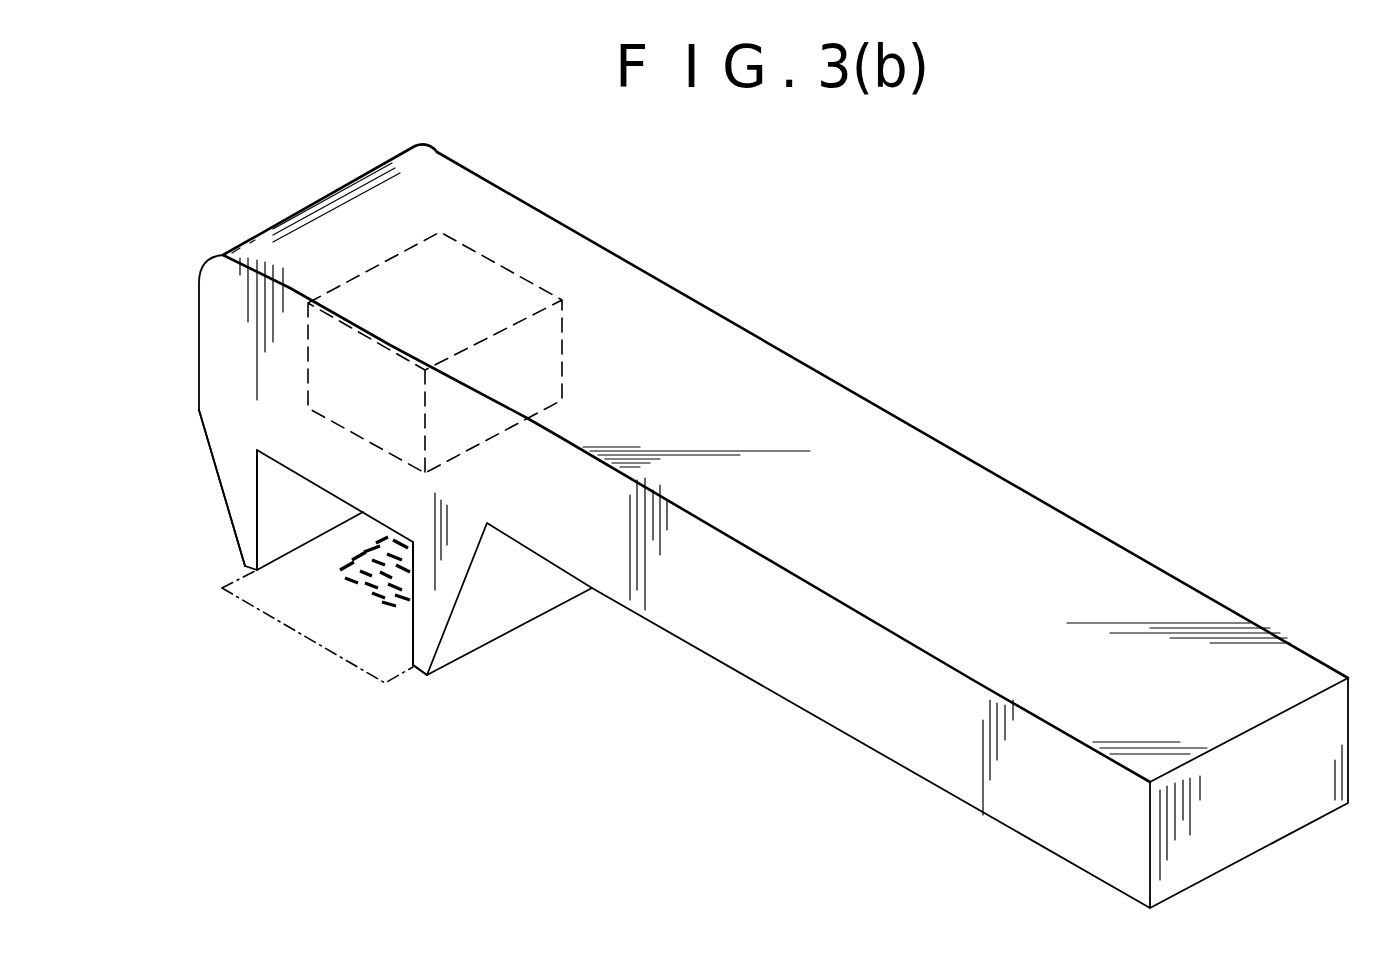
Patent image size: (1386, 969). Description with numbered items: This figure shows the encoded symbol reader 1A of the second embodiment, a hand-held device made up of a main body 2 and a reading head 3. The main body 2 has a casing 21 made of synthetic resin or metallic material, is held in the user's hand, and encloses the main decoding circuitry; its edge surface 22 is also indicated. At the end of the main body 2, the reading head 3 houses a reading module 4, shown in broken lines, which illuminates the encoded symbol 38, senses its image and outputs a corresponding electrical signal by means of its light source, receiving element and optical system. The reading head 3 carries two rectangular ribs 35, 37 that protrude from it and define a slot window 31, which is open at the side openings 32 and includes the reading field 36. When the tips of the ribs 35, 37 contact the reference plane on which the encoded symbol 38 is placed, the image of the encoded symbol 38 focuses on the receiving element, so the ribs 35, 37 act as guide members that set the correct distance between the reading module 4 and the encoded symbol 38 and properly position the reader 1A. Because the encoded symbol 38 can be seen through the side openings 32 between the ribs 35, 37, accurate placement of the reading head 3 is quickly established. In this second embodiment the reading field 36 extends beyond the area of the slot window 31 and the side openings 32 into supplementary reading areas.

The encoded symbol reader 1A is at (745, 517).
The main body 2 is at (848, 387).
The casing 21 is at (1020, 515).
The chamfered edge surface 22 is at (322, 237).
The reading head 3 is at (500, 607).
The slot window 31 is at (320, 555).
The side openings 32 is at (270, 510).
The rectangular rib 35 is at (445, 658).
The reading field 36 is at (310, 647).
The rectangular rib 37 is at (237, 547).
The encoded symbol 38 is at (368, 587).
The reading module 4 is at (507, 268).